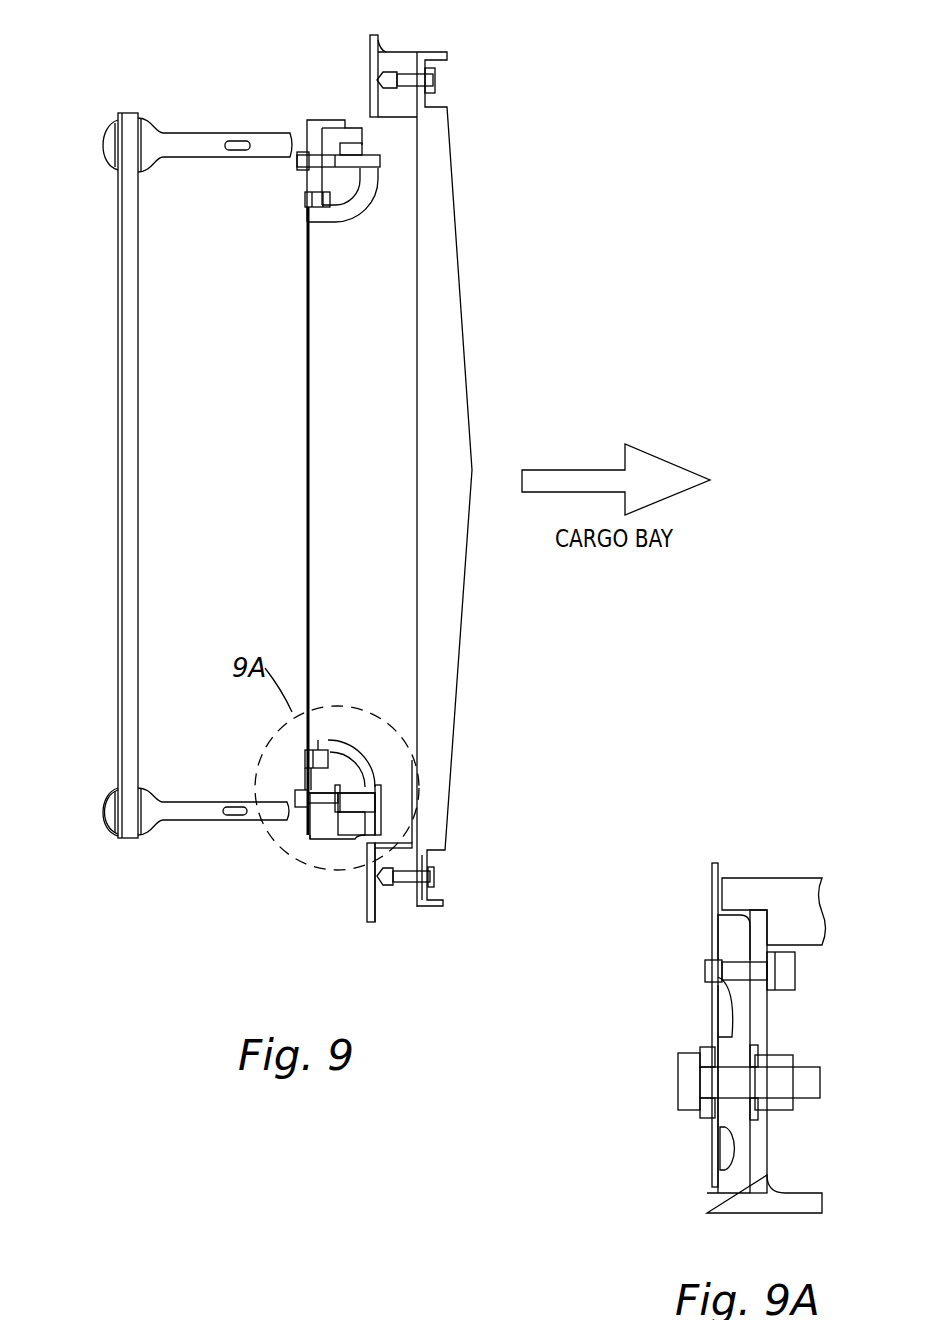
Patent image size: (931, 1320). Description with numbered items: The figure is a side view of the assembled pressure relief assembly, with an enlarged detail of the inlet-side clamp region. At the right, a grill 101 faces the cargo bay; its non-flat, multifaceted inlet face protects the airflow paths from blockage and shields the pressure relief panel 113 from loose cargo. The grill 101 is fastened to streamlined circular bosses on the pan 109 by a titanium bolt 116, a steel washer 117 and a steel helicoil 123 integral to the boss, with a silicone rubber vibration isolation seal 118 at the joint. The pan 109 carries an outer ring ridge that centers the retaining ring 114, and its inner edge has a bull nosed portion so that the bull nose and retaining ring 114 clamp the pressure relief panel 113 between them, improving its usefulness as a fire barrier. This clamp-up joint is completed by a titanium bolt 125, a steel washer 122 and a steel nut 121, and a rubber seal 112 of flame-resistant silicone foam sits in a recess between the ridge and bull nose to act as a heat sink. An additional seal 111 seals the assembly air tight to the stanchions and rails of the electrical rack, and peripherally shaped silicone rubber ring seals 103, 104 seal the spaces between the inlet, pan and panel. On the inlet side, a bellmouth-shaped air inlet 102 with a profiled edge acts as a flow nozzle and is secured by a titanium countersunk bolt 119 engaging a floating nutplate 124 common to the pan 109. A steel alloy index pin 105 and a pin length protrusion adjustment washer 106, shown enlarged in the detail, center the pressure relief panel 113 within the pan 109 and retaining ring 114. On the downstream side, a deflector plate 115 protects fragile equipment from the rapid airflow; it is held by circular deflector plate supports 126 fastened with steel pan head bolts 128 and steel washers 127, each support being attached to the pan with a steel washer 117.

In FIG. 9, the grill 101 is at (462, 309).
In FIG. 9, the bellmouth-shaped inlet 102 is at (345, 797).
In FIG. 9, the silicone rubber ring seal 103 is at (372, 825).
In FIG. 9, the silicone rubber ring seal 104 is at (319, 742).
In FIG. 9, the index pin 105 is at (362, 742).
In FIG. 9, the pin length protrusion adjustment washer 106 is at (310, 752).
In FIG. 9A, the pin length protrusion adjustment washer 106 is at (767, 917).
In FIG. 9, the pan 109 is at (372, 925).
In FIG. 9, the seal 111 is at (368, 918).
In FIG. 9, the rubber seal 112 is at (305, 769).
In FIG. 9, the pressure relief panel 113 is at (306, 376).
In FIG. 9, the retaining ring 114 is at (318, 840).
In FIG. 9, the deflector plate 115 is at (118, 318).
In FIG. 9, the titanium bolt 116 is at (434, 877).
In FIG. 9, the steel washer 117 is at (297, 797).
In FIG. 9, the silicone rubber vibration isolation seal 118 is at (415, 52).
In FIG. 9, the titanium countersunk bolt 119 is at (380, 162).
In FIG. 9, the steel nut 121 is at (381, 794).
In FIG. 9, the steel washer 122 is at (415, 762).
In FIG. 9, the steel helicoil 123 is at (406, 70).
In FIG. 9, the floating nutplate 124 is at (357, 143).
In FIG. 9, the titanium bolt 125 is at (257, 803).
In FIG. 9, the deflector plate support 126 is at (193, 136).
In FIG. 9, the steel washer 127 is at (118, 790).
In FIG. 9, the steel pan head bolt 128 is at (110, 832).